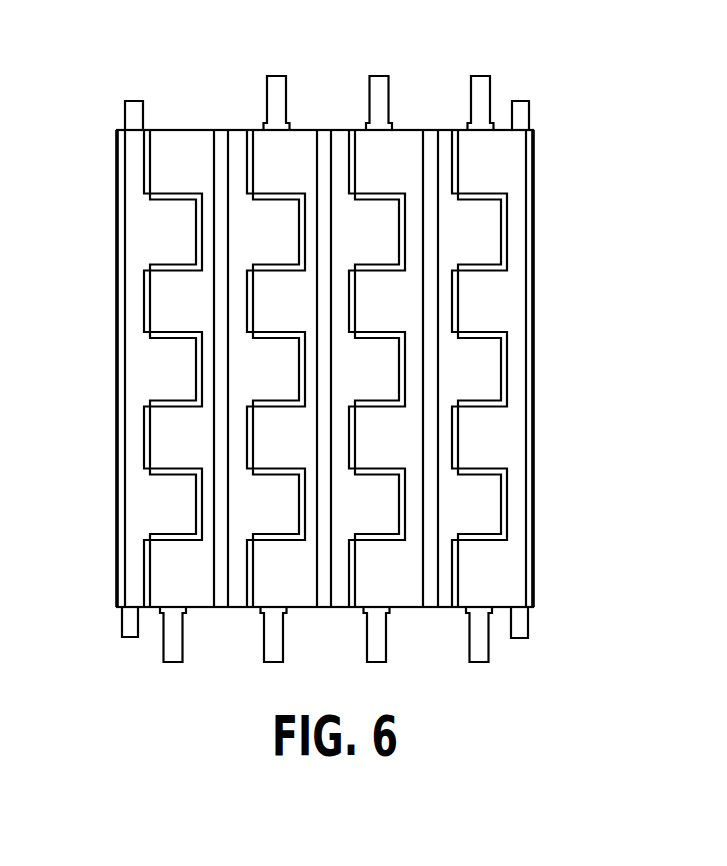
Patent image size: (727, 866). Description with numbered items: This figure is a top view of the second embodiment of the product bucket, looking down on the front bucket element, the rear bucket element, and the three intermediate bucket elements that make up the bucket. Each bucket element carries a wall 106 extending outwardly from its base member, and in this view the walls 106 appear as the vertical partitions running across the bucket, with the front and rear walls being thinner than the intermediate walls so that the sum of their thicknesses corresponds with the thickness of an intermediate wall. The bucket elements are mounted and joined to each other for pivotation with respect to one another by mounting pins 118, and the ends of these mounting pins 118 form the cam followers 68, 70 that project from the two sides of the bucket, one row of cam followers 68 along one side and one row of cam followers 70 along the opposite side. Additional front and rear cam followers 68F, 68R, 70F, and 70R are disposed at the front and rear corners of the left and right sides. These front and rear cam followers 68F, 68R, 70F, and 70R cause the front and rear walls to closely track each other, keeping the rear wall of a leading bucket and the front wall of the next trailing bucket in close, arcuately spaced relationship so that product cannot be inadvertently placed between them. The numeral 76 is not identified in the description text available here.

The housing body 76 is at (410, 132).
The cam follower 70 is at (370, 108).
The front cam follower 70F is at (125, 117).
The rear cam follower 70R is at (528, 117).
The cam follower 68 is at (183, 632).
The front cam follower 68F is at (122, 620).
The rear cam follower 68R is at (527, 622).
The mounting pin 118 is at (290, 629).
The wall 106 is at (330, 575).